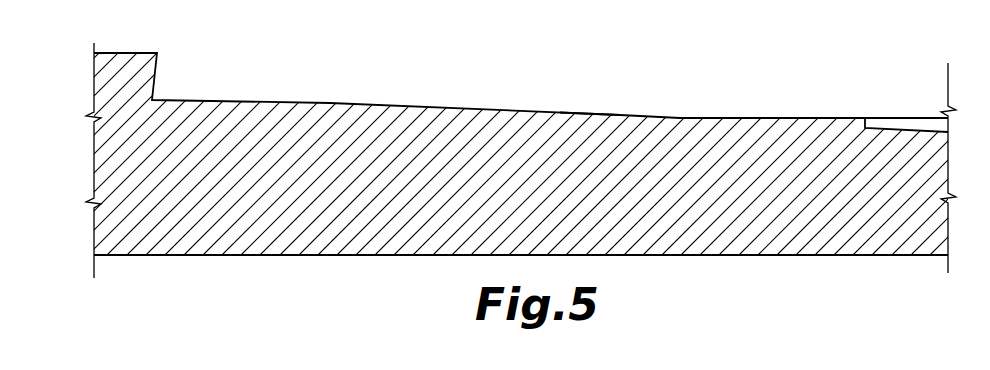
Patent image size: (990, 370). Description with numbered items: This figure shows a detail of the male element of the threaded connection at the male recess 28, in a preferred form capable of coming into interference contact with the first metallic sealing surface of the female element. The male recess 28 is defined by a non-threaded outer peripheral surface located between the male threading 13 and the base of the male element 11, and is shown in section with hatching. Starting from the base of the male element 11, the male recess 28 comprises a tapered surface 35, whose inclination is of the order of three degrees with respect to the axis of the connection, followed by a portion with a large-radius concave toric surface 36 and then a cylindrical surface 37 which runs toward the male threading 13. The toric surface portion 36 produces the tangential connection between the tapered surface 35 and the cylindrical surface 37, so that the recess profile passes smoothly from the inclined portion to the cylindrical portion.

The base of the male element 11 is at (452, 256).
The male threading 13 is at (895, 122).
The male recess 28 is at (240, 102).
The tapered surface 35 is at (418, 105).
The concave toric surface 36 is at (610, 112).
The cylindrical surface 37 is at (768, 117).